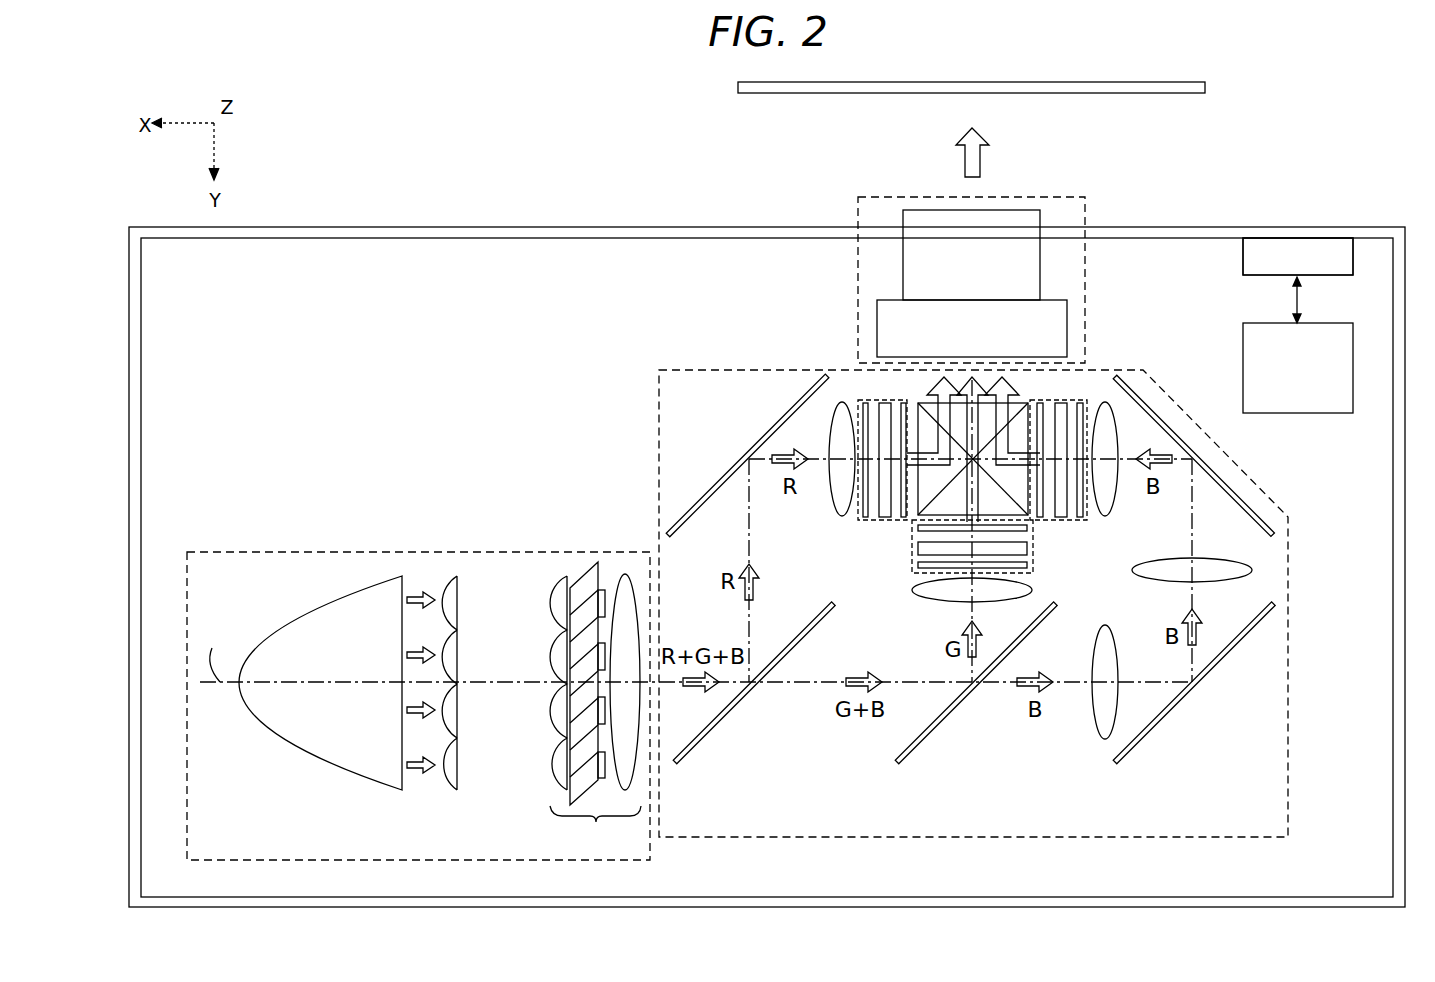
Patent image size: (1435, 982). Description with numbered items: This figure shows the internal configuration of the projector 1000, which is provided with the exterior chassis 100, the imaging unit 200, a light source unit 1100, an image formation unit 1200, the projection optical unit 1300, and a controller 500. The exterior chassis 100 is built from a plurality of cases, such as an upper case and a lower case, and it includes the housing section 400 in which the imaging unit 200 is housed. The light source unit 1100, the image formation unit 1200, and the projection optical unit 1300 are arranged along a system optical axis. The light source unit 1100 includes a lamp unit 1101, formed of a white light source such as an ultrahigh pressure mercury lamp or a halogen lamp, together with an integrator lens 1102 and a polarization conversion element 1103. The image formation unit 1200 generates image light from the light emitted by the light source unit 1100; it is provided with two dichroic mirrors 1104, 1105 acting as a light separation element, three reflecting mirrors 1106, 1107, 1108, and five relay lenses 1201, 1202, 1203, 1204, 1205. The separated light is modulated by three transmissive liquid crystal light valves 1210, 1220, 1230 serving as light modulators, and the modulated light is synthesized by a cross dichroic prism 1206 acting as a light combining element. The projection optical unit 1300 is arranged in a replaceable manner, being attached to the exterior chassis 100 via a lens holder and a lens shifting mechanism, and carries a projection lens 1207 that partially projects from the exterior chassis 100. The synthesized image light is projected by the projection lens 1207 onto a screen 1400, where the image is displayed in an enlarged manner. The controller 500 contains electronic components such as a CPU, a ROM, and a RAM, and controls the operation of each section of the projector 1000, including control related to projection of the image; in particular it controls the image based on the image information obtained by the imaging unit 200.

The exterior chassis 100 is at (546, 226).
The imaging unit 200 is at (1257, 245).
The housing section 400 is at (1340, 258).
The controller 500 is at (1243, 362).
The projector 1000 is at (1282, 160).
The light source unit 1100 is at (428, 550).
The lamp unit 1101 is at (317, 767).
The integrator lens 1102 is at (453, 792).
The polarization conversion element 1103 is at (595, 707).
The dichroic mirror 1104 is at (712, 727).
The dichroic mirror 1105 is at (934, 727).
The reflecting mirror 1106 is at (747, 453).
The reflecting mirror 1107 is at (1152, 727).
The reflecting mirror 1108 is at (1222, 480).
The image formation unit 1200 is at (680, 368).
The relay lens 1201 is at (1102, 740).
The relay lens 1202 is at (1252, 568).
The relay lens 1203 is at (1105, 518).
The relay lens 1204 is at (908, 592).
The relay lens 1205 is at (842, 518).
The cross dichroic prism 1206 is at (1022, 402).
The projection lens 1207 is at (1030, 255).
The transmissive liquid crystal light valve 1210 is at (868, 400).
The transmissive liquid crystal light valve 1220 is at (1035, 565).
The transmissive liquid crystal light valve 1230 is at (1080, 400).
The projection optical unit 1300 is at (858, 258).
The screen 1400 is at (1128, 95).